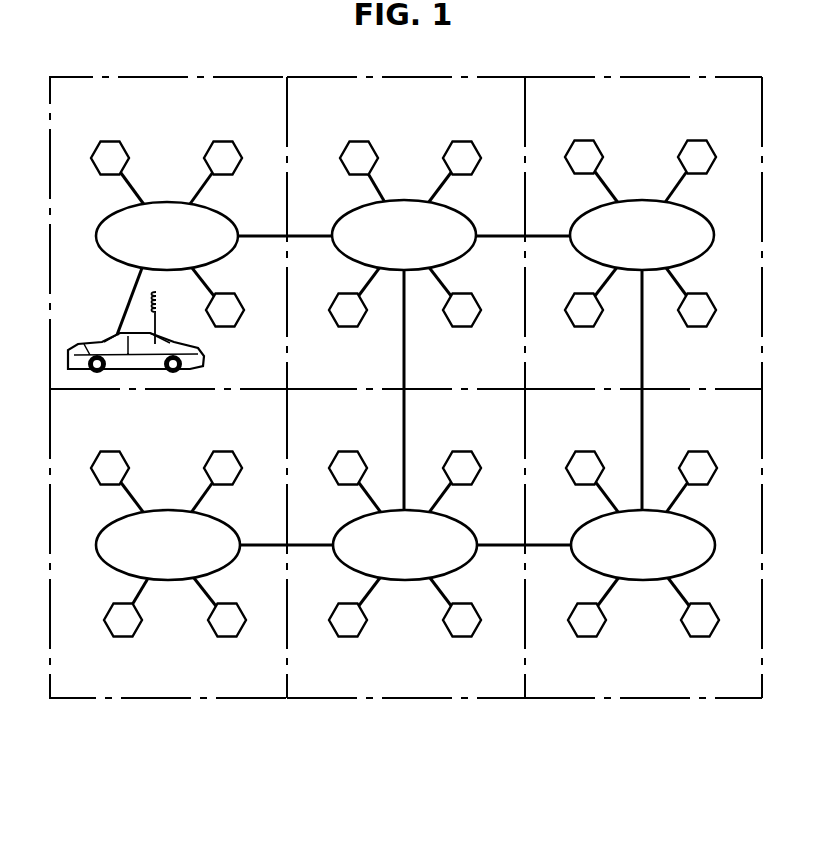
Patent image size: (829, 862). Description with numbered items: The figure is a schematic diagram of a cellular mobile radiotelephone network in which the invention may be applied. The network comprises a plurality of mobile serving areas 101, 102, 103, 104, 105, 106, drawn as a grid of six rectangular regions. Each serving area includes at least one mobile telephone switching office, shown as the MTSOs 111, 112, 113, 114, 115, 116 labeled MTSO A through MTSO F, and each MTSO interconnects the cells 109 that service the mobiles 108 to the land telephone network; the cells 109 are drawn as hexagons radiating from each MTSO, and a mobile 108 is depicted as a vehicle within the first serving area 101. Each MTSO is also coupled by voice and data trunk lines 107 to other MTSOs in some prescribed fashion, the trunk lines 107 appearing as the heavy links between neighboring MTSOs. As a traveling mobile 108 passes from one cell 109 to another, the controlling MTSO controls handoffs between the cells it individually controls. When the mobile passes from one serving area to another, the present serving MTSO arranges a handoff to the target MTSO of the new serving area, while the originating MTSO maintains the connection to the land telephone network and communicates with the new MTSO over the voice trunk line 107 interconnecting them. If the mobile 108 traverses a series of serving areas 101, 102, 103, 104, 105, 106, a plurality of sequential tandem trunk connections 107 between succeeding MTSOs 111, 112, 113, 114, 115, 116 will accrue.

The mobile serving area 101 is at (210, 76).
The mobile serving area 102 is at (448, 76).
The mobile serving area 103 is at (684, 76).
The mobile serving area 104 is at (688, 699).
The mobile serving area 105 is at (450, 699).
The mobile serving area 106 is at (214, 699).
The voice and data trunk lines 107 is at (259, 236).
The mobile 108 is at (87, 338).
The cell 109 is at (404, 390).
The MTSO 111 is at (165, 192).
The MTSO 112 is at (403, 192).
The MTSO 113 is at (639, 192).
The MTSO 114 is at (647, 582).
The MTSO 115 is at (409, 582).
The MTSO 116 is at (173, 582).